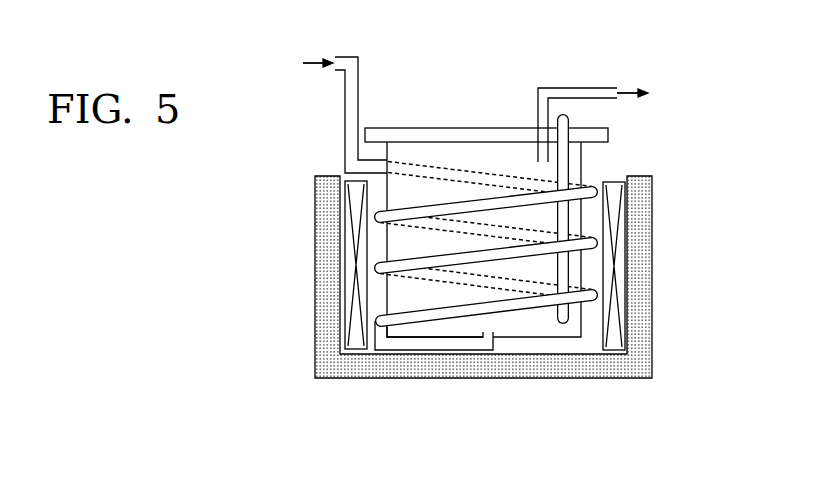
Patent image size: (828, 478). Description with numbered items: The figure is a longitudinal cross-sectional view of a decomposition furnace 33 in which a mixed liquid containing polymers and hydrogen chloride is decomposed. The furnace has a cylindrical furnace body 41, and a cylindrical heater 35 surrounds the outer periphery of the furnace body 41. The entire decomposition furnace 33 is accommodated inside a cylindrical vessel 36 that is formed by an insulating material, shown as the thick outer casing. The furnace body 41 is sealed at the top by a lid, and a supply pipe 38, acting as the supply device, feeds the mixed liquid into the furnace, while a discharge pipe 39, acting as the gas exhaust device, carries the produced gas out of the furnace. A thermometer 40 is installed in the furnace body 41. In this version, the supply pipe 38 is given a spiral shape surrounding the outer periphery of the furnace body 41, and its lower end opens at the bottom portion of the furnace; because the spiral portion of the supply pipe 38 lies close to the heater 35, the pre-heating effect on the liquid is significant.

The decomposition furnace 33 is at (471, 88).
The cylindrical heater 35 is at (615, 207).
The cylindrical vessel 36 is at (330, 232).
The supply pipe 38 is at (355, 99).
The discharge pipe 39 is at (572, 87).
The thermometer 40 is at (569, 120).
The furnace body 41 is at (581, 165).